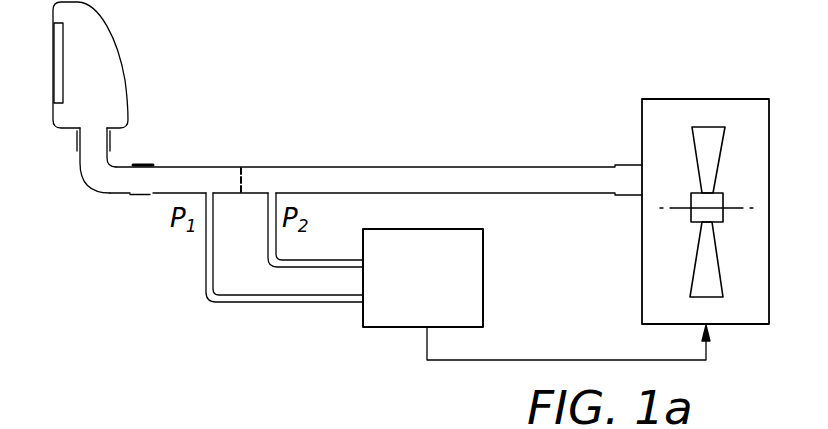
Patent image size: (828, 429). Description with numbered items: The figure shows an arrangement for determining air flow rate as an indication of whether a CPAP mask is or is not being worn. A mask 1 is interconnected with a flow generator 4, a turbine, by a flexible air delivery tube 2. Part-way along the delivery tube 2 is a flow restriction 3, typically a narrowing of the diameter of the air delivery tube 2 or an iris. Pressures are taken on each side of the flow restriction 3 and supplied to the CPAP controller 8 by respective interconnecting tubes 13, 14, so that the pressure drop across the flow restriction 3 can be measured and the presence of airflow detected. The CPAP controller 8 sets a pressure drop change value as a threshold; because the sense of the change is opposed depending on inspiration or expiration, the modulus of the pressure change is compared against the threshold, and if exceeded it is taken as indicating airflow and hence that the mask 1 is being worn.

The mask 1 is at (127, 88).
The flexible air delivery tube 2 is at (373, 167).
The flow restriction 3 is at (248, 177).
The flow generator (turbine) 4 is at (658, 99).
The CPAP controller 8 is at (485, 258).
The interconnecting tube 13 is at (204, 273).
The interconnecting tube 14 is at (290, 270).